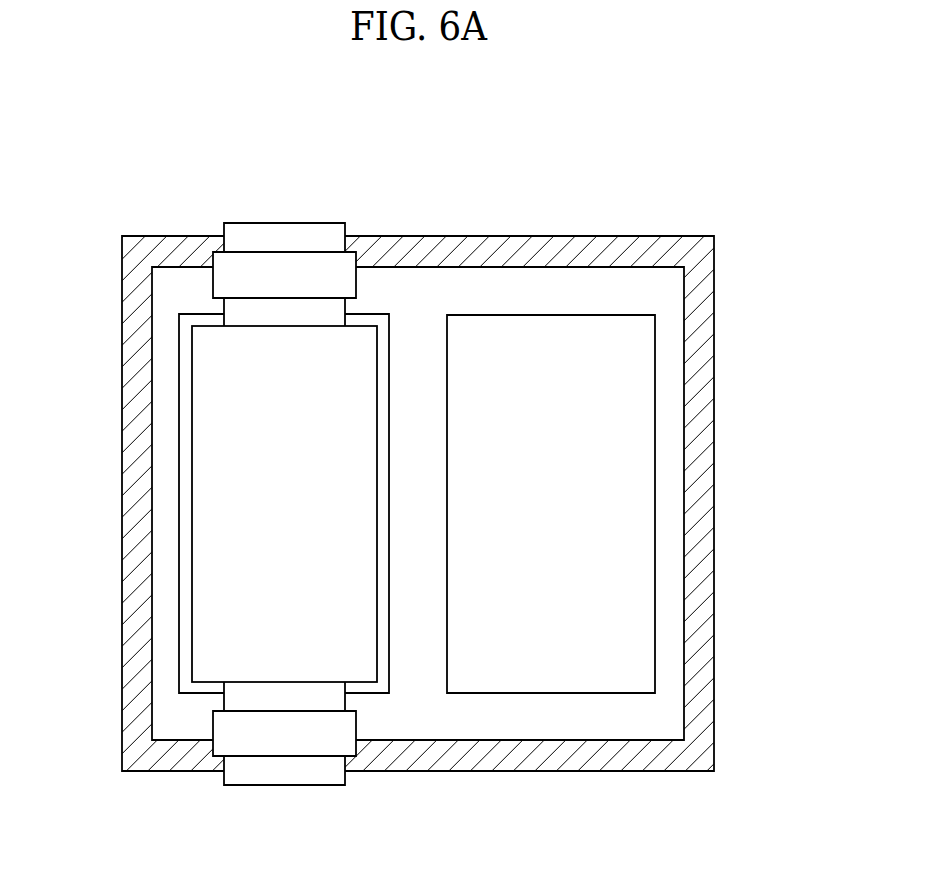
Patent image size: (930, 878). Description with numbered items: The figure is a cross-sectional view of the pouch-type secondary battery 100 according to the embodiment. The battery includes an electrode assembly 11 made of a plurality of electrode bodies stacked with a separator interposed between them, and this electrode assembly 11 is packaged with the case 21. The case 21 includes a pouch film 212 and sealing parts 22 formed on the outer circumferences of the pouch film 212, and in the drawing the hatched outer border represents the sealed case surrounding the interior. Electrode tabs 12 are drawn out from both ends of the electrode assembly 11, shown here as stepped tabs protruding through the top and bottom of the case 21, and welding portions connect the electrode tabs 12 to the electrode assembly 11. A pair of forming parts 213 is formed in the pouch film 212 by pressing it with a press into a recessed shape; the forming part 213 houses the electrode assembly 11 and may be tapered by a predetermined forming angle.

The battery pack 100 is at (108, 132).
The battery cell 11 is at (208, 445).
The electrode tab 12 is at (283, 238).
The case 21 is at (425, 503).
The case body 22 is at (708, 465).
The inner accommodating portion 212 is at (165, 564).
The accommodating recess 213 is at (182, 625).